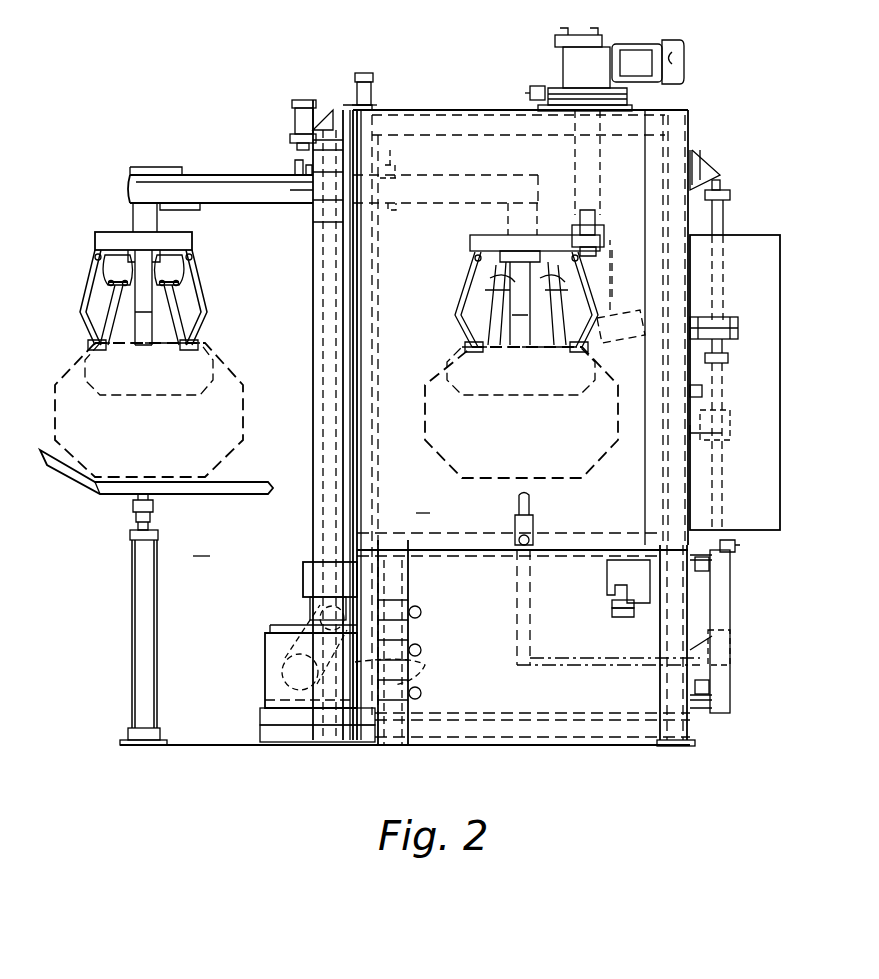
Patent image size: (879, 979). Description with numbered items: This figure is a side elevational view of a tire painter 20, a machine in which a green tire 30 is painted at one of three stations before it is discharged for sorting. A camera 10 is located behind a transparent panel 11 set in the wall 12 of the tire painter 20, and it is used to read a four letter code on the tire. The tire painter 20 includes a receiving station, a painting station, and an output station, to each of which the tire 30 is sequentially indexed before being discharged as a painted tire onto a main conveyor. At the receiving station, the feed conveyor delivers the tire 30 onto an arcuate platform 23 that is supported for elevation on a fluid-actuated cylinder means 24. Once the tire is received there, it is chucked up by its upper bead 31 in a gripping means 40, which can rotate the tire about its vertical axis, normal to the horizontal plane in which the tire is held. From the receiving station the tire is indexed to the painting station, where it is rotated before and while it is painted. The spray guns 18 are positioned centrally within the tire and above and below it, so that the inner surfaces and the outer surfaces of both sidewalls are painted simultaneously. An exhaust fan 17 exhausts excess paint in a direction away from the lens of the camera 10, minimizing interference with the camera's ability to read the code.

The tire painter 20 is at (458, 92).
The wall 12 is at (692, 142).
The exhaust fan 17 is at (622, 308).
The spray guns 18 is at (742, 325).
The camera 10 is at (705, 395).
The transparent panel 11 is at (700, 435).
The gripping means 40 is at (105, 226).
The upper bead 31 is at (93, 344).
The tire 30 is at (46, 420).
The arcuate platform 23 is at (93, 497).
The fluid-actuated cylinder means 24 is at (133, 618).